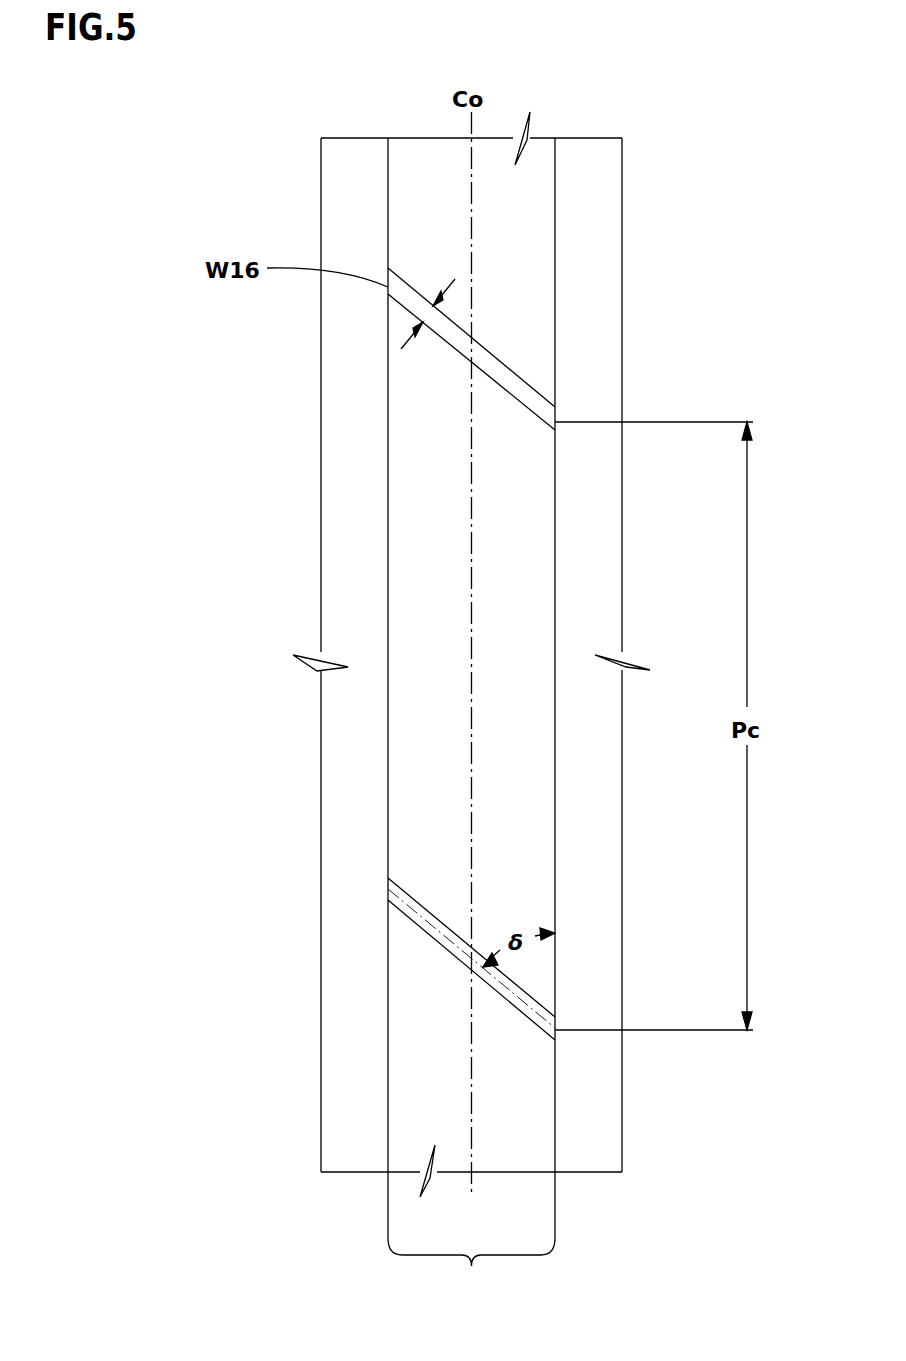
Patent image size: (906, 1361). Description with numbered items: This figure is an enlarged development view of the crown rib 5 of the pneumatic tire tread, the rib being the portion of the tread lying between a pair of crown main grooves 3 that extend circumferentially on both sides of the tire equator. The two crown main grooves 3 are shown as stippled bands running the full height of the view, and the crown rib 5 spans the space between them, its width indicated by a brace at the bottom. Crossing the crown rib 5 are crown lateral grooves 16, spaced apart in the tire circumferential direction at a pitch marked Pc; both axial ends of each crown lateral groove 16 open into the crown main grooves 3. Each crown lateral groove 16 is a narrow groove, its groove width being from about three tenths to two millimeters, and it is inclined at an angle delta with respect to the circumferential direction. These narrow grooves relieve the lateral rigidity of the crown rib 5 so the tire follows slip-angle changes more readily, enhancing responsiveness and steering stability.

The crown main groove 3 is at (355, 1148).
The crown lateral groove 16 is at (508, 367).
The crown rib 5 is at (471, 1236).